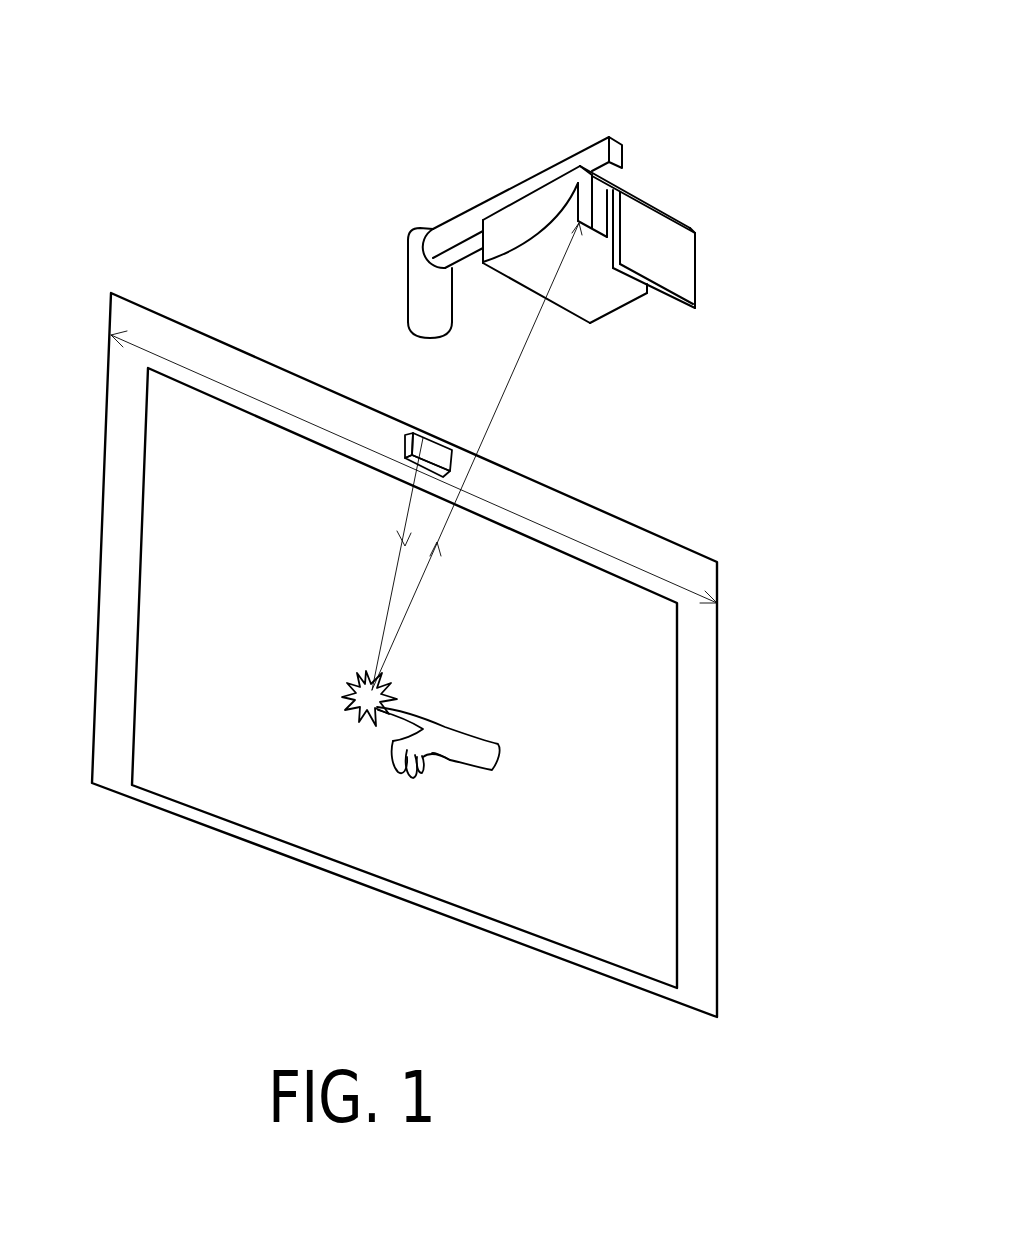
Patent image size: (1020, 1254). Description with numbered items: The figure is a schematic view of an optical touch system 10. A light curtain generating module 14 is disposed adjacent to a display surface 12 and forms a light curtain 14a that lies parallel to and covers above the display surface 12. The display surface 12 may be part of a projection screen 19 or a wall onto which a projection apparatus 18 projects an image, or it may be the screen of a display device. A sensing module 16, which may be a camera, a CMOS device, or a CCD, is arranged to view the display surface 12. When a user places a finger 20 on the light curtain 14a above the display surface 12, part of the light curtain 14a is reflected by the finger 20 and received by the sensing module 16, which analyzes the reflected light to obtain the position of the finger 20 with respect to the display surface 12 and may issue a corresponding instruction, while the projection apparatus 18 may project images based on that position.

The optical touch system 10 is at (81, 130).
The display surface 12 is at (165, 472).
The light curtain generating module 14 is at (423, 432).
The light curtain 14a is at (415, 503).
The sensing module 16 is at (600, 202).
The projection apparatus 18 is at (671, 268).
The projection screen 19 is at (153, 323).
The finger 20 is at (391, 718).